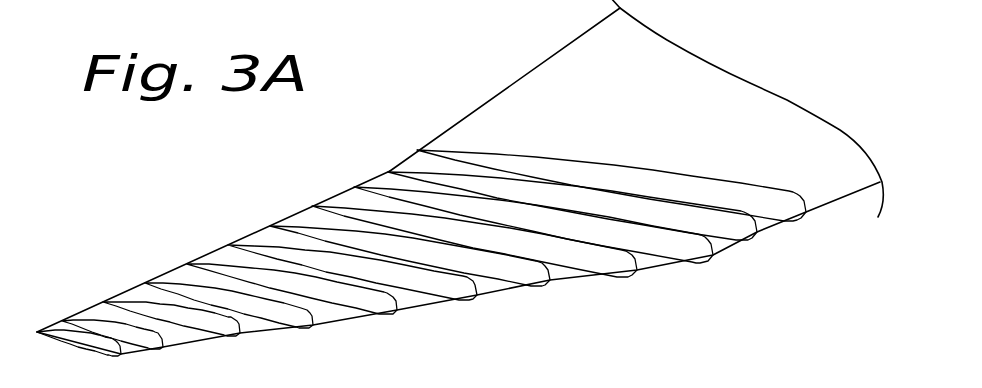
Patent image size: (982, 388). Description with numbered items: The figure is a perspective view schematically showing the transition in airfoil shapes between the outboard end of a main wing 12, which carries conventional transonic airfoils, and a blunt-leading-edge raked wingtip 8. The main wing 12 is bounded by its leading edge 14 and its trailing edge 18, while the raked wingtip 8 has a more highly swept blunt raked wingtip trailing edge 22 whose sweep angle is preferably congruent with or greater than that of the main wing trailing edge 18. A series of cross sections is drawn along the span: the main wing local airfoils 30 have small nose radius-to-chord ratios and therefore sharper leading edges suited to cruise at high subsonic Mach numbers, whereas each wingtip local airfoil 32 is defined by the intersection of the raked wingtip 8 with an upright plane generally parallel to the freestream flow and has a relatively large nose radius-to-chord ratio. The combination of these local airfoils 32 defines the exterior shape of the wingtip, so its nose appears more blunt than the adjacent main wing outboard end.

The blunt-leading-edge raked wingtip 8 is at (280, 291).
The main wing 12 is at (552, 88).
The leading edge 14 is at (850, 196).
The trailing edge 18 is at (457, 118).
The blunt raked wingtip trailing edge 22 is at (200, 256).
The local airfoils 30 is at (817, 211).
The local airfoil 32 is at (563, 275).